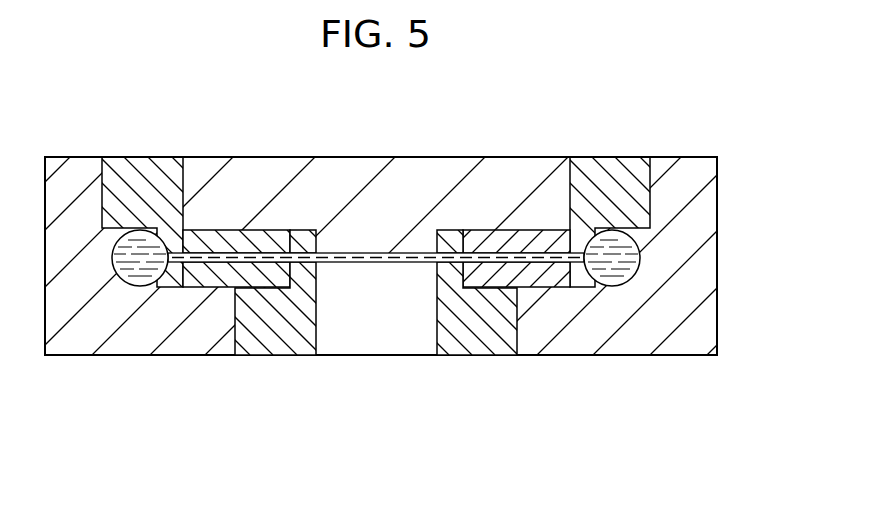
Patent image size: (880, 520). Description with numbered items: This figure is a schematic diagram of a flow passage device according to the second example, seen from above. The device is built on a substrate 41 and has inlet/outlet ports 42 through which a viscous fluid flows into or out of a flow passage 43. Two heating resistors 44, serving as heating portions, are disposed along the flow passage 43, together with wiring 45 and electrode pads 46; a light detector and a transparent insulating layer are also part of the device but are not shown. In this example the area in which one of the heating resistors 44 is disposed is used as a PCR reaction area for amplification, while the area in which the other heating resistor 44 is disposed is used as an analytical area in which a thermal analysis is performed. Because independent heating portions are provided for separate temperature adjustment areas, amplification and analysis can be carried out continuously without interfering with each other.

The substrate 41 is at (681, 166).
The inlet/outlet ports 42 is at (113, 257).
The flow passage 43 is at (508, 253).
The heating resistors 44 is at (490, 243).
The wiring 45 is at (447, 238).
The electrode pads 46 is at (285, 333).